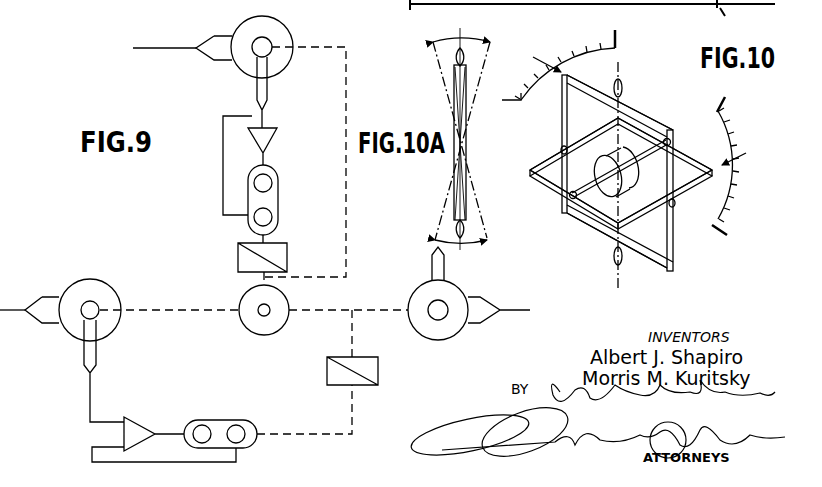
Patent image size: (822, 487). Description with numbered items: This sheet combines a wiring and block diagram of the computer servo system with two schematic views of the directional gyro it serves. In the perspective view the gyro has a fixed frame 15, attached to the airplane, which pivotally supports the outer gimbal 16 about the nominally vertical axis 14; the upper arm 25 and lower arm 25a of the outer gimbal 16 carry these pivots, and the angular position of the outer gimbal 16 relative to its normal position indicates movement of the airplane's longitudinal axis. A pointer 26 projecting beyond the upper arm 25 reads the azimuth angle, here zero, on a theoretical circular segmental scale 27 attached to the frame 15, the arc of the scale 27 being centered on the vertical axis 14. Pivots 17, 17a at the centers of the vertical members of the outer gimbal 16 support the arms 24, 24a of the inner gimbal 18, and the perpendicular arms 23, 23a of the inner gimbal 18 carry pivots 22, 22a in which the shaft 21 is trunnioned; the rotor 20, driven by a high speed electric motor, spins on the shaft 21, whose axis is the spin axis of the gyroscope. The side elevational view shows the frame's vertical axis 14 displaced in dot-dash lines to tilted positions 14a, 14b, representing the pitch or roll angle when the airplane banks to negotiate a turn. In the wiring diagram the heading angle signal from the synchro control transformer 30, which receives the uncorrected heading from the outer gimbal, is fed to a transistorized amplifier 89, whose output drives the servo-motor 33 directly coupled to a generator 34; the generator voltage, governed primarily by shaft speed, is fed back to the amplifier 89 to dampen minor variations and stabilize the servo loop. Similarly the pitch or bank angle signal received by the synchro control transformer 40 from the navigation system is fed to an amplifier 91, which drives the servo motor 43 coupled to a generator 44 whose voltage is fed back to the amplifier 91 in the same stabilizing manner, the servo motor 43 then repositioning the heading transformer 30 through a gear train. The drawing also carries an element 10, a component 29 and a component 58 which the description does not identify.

In FIG. 10, the scale 10 is at (580, 12).
In FIG. 10A, the vertical axis 14 is at (460, 36).
In FIG. 10, the vertical axis 14 is at (622, 68).
In FIG. 10A, the tilted position of vertical axis 14a is at (437, 60).
In FIG. 10A, the tilted position of vertical axis 14b is at (488, 62).
In FIG. 10, the frame 15 is at (620, 80).
In FIG. 10, the outer gimbal 16 is at (663, 120).
In FIG. 10, the pivot 17 is at (561, 149).
In FIG. 10, the pivot 17a is at (674, 207).
In FIG. 10, the inner gimbal 18 is at (546, 190).
In FIG. 10, the rotor 20 is at (633, 181).
In FIG. 10, the shaft 21 is at (588, 203).
In FIG. 10, the pivot 22 is at (570, 197).
In FIG. 10, the pivot 22a is at (671, 143).
In FIG. 10, the arm 23 is at (598, 215).
In FIG. 10, the arm 23a is at (701, 163).
In FIG. 10, the arm 24 is at (538, 164).
In FIG. 10, the arm 24a is at (689, 189).
In FIG. 10, the upper arm 25 is at (622, 102).
In FIG. 10, the lower arm 25a is at (660, 270).
In FIG. 10, the pointer 26 is at (589, 57).
In FIG. 10, the scale 27 is at (521, 90).
In FIG. 9, the resolver 29 is at (287, 304).
In FIG. 9, the synchro control transformer 30 is at (100, 303).
In FIG. 9, the servo-motor 33 is at (204, 425).
In FIG. 9, the generator 34 is at (238, 425).
In FIG. 9, the synchro control transformer 40 is at (272, 40).
In FIG. 9, the servo motor 43 is at (272, 183).
In FIG. 9, the generator 44 is at (272, 217).
In FIG. 9, the gyroscope 58 is at (430, 330).
In FIG. 9, the amplifier 89 is at (148, 413).
In FIG. 9, the amplifier 91 is at (267, 134).